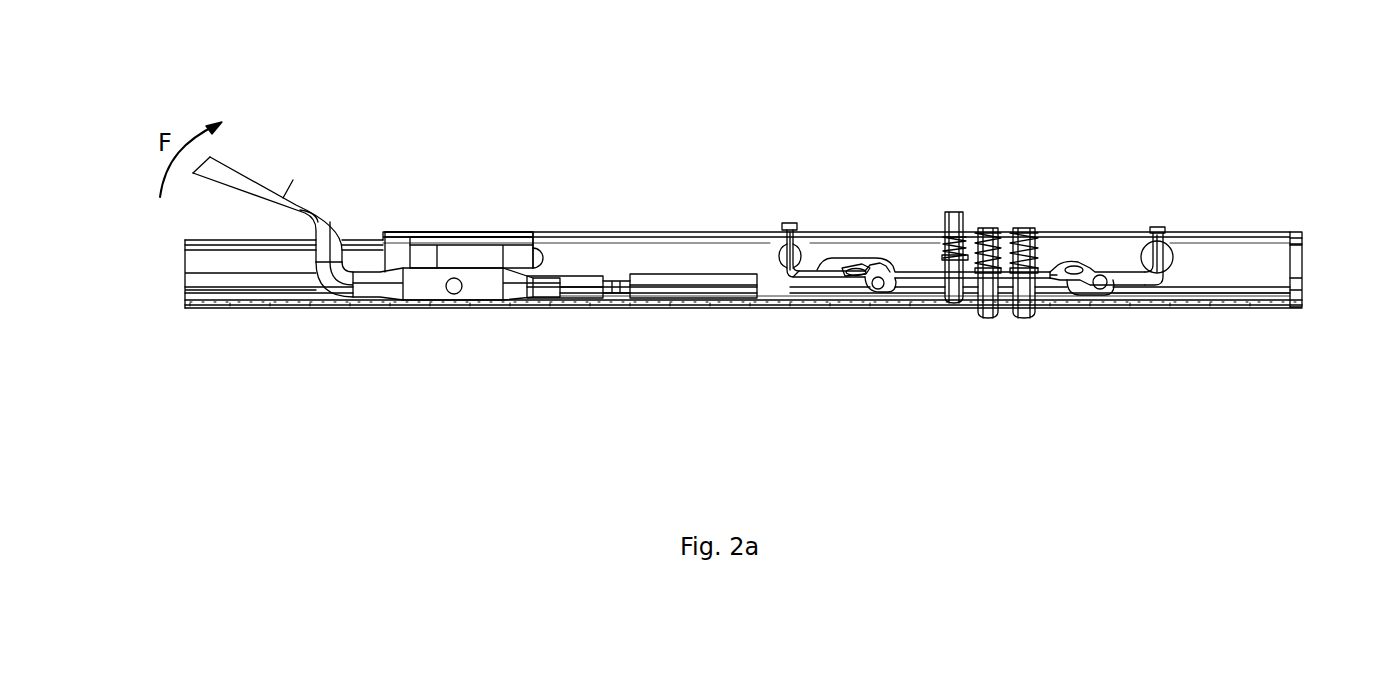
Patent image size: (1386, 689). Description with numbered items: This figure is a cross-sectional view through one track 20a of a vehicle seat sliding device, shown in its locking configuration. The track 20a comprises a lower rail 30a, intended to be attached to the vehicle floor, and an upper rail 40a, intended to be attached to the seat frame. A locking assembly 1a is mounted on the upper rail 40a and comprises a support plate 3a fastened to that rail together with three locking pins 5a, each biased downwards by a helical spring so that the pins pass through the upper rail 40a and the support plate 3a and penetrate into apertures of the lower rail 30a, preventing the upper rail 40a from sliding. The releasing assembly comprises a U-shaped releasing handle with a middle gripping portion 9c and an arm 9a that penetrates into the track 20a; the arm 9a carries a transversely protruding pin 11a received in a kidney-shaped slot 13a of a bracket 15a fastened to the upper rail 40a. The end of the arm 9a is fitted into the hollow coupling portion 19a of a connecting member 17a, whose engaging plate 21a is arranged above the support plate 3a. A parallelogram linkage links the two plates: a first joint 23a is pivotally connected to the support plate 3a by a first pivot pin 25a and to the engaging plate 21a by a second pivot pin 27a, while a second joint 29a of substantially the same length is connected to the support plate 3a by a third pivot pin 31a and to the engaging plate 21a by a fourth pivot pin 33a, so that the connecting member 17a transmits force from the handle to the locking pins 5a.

The locking assembly 1a is at (1090, 268).
The support plate 3a is at (1173, 253).
The locking pin 5a is at (953, 212).
The arm 9a is at (320, 293).
The middle gripping portion 9c is at (243, 175).
The transversely protruding pin 11a is at (453, 295).
The kidney-shaped slot 13a is at (475, 262).
The bracket 15a is at (532, 237).
The connecting member 17a is at (673, 316).
The coupling portion 19a is at (683, 275).
The track 20a is at (188, 314).
The engaging plate 21a is at (868, 262).
The first joint 23a is at (822, 258).
The first pivot pin 25a is at (877, 292).
The second pivot pin 27a is at (833, 291).
The second joint 29a is at (1056, 226).
The lower rail 30a is at (1155, 308).
The third pivot pin 31a is at (1098, 292).
The fourth pivot pin 33a is at (1058, 298).
The upper rail 40a is at (1237, 228).